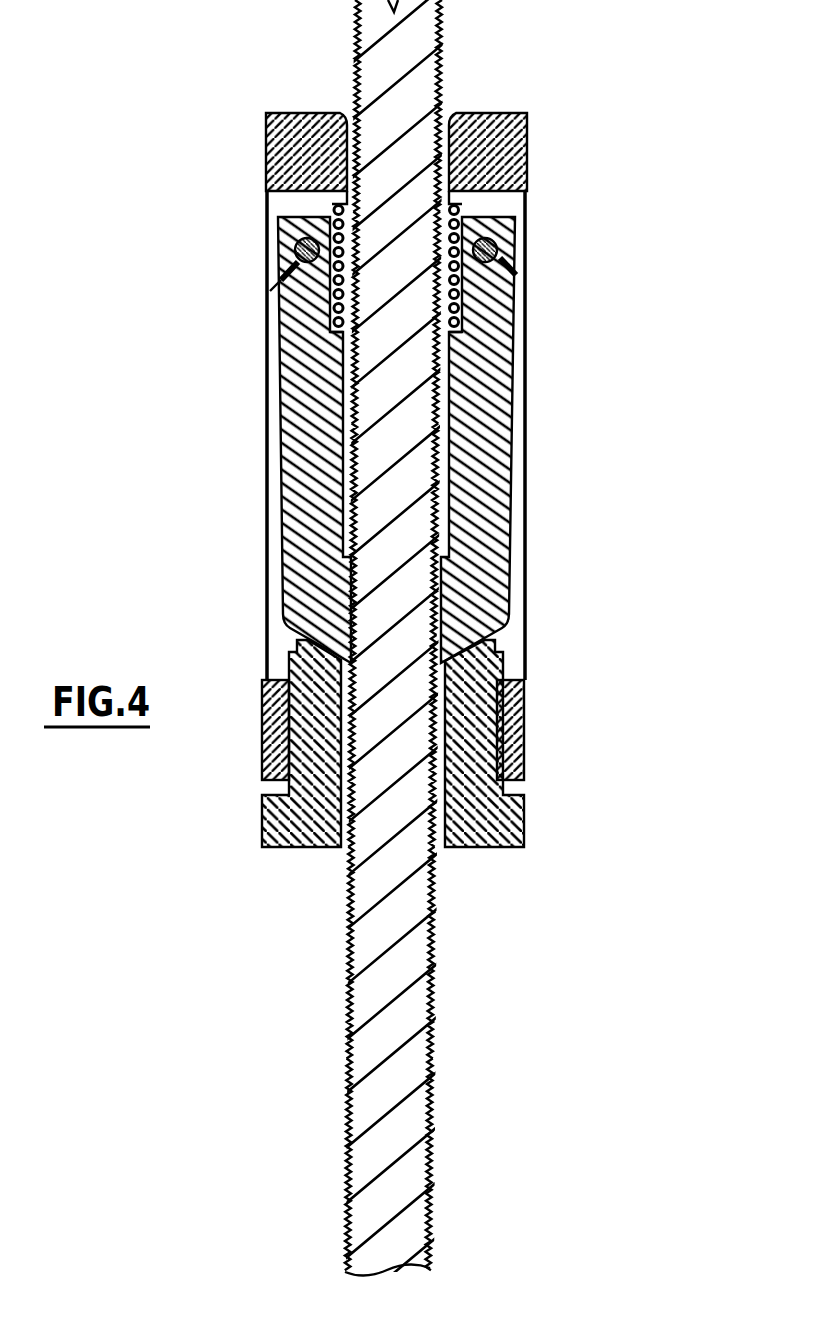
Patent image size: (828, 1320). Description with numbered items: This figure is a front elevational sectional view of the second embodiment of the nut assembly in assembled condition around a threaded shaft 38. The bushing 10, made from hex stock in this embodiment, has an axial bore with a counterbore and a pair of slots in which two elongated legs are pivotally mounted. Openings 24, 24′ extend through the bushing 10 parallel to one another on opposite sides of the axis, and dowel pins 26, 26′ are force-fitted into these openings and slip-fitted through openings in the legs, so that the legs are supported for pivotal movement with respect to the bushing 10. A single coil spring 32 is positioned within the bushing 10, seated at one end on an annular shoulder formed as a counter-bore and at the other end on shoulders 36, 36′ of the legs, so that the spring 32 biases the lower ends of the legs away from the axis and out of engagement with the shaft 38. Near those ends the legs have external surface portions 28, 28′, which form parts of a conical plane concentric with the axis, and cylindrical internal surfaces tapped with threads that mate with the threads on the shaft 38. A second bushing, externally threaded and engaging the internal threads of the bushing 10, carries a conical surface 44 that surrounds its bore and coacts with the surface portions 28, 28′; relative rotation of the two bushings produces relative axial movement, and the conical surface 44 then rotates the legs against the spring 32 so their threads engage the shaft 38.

The bushing 10 is at (525, 707).
The opening 24 is at (516, 275).
The opening 24′ is at (275, 286).
The dowel pin 26 is at (496, 244).
The dowel pin 26′ is at (294, 243).
The external surface portion 28 is at (503, 629).
The external surface portion 28′ is at (290, 629).
The coil spring 32 is at (338, 291).
The shoulder 36 is at (452, 335).
The shoulder 36′ is at (345, 334).
The threaded shaft 38 is at (403, 1110).
The conical surface 44 is at (340, 652).